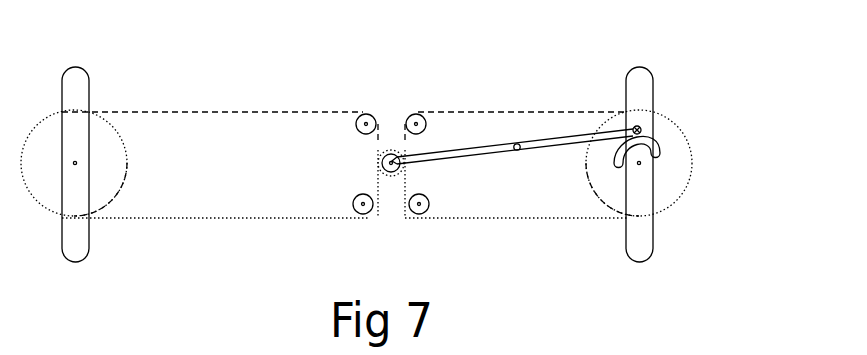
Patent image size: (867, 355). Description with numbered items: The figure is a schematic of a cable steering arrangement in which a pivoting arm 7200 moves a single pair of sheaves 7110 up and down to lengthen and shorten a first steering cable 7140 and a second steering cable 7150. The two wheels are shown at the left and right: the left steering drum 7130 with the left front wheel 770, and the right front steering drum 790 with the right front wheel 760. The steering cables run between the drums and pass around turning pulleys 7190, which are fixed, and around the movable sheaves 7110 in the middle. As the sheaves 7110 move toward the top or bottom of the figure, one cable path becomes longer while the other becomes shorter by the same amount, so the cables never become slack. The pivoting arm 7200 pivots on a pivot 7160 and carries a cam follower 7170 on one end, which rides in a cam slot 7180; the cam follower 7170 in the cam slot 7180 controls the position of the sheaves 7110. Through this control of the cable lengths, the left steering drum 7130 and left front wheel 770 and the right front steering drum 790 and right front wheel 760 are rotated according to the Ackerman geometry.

The left steering drum 7130 is at (42, 147).
The left front wheel 770 is at (73, 93).
The second steering cable 7150 is at (471, 112).
The first steering cable 7140 is at (130, 218).
The turning pulleys 7190 is at (409, 199).
The sheaves 7110 is at (390, 168).
The pivoting arm 7200 is at (485, 152).
The pivot 7160 is at (517, 150).
The cam follower 7170 is at (637, 126).
The cam slot 7180 is at (655, 157).
The right front steering drum 790 is at (667, 145).
The right front wheel 760 is at (640, 88).